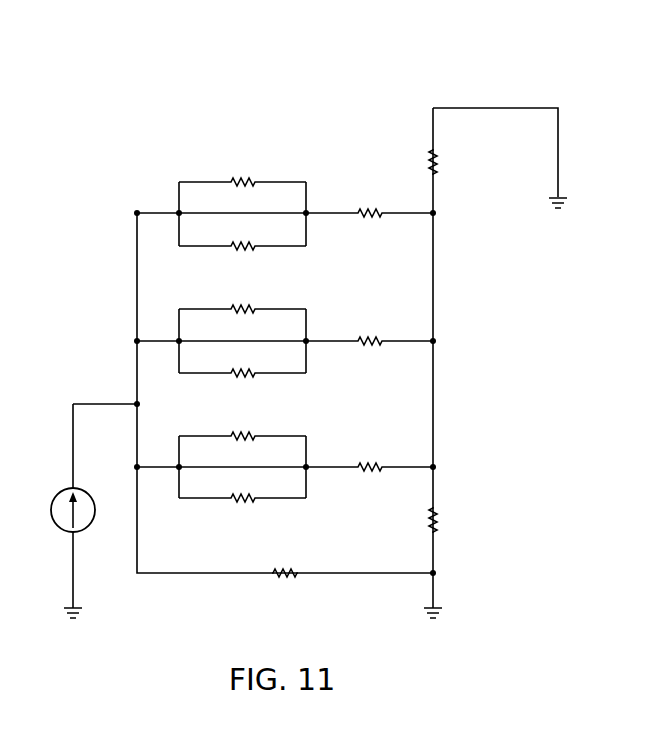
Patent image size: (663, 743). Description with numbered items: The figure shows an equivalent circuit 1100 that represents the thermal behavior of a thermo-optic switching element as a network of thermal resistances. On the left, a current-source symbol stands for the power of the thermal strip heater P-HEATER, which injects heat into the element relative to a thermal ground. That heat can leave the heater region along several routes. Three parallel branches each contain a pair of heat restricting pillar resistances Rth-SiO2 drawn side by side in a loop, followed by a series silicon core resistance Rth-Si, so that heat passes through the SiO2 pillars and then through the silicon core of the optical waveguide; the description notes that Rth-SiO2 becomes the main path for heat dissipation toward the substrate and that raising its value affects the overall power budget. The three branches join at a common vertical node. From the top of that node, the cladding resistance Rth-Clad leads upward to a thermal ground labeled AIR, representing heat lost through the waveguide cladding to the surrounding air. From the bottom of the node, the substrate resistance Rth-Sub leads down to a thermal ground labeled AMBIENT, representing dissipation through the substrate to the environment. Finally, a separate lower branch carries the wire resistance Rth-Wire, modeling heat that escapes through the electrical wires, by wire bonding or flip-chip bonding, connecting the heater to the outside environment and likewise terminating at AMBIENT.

The equivalent circuit 1100 is at (208, 93).
The thermal resistance of heat restricting pillar Rth-SiO2 is at (228, 323).
The thermal resistance of silicon core Rth-Si is at (362, 323).
The thermal resistance of electrical wires Rth-Wire is at (277, 555).
The thermal resistance of cladding Rth-Clad is at (463, 163).
The thermal resistance of substrate Rth-Sub is at (461, 523).
The power of thermal strip heater P-HEATER is at (64, 571).
The ambient AMBIENT is at (432, 630).
The air AIR is at (560, 218).